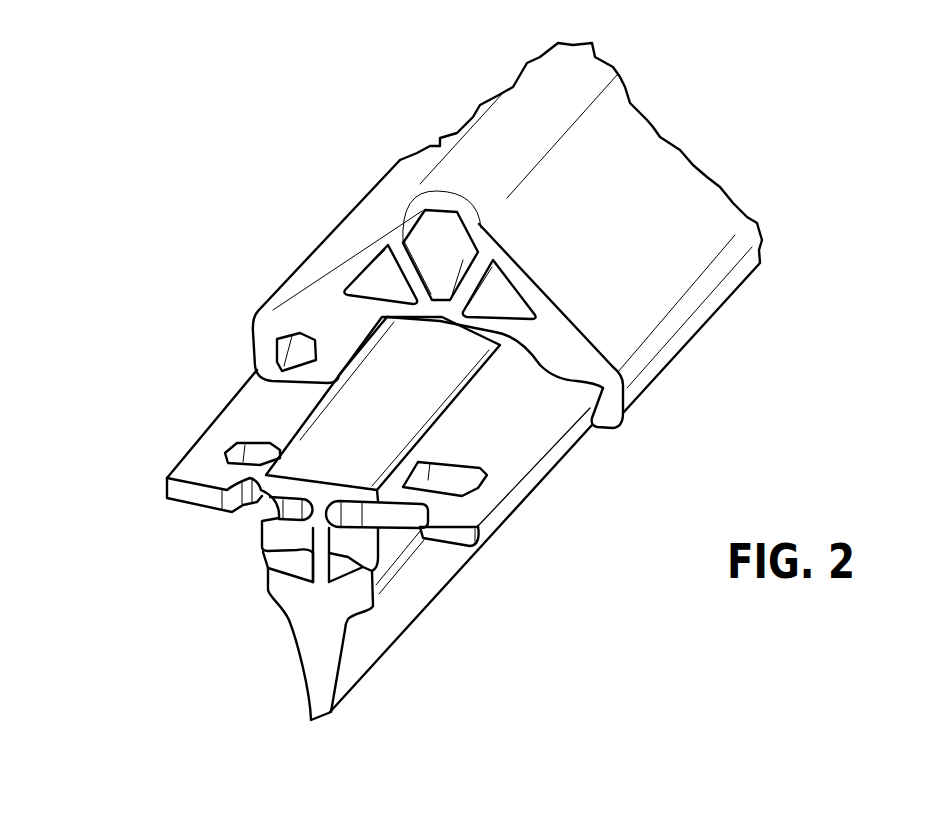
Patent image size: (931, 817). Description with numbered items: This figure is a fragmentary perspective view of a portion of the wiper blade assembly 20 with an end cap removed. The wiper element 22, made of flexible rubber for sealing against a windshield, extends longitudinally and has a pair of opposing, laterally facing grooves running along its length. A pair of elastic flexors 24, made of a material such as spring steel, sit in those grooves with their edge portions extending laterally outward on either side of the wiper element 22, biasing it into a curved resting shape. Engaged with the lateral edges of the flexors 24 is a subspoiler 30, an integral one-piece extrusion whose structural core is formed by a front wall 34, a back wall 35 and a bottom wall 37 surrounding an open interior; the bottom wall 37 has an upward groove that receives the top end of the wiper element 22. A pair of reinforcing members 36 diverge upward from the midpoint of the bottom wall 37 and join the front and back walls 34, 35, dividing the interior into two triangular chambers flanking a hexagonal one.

The wiper blade assembly 20 is at (278, 239).
The wiper element 22 is at (325, 673).
The flexors 24 is at (188, 470).
The subspoiler 30 is at (637, 157).
The front wall 34 is at (527, 284).
The back wall 35 is at (375, 247).
The reinforcing members 36 is at (470, 280).
The bottom wall 37 is at (500, 345).